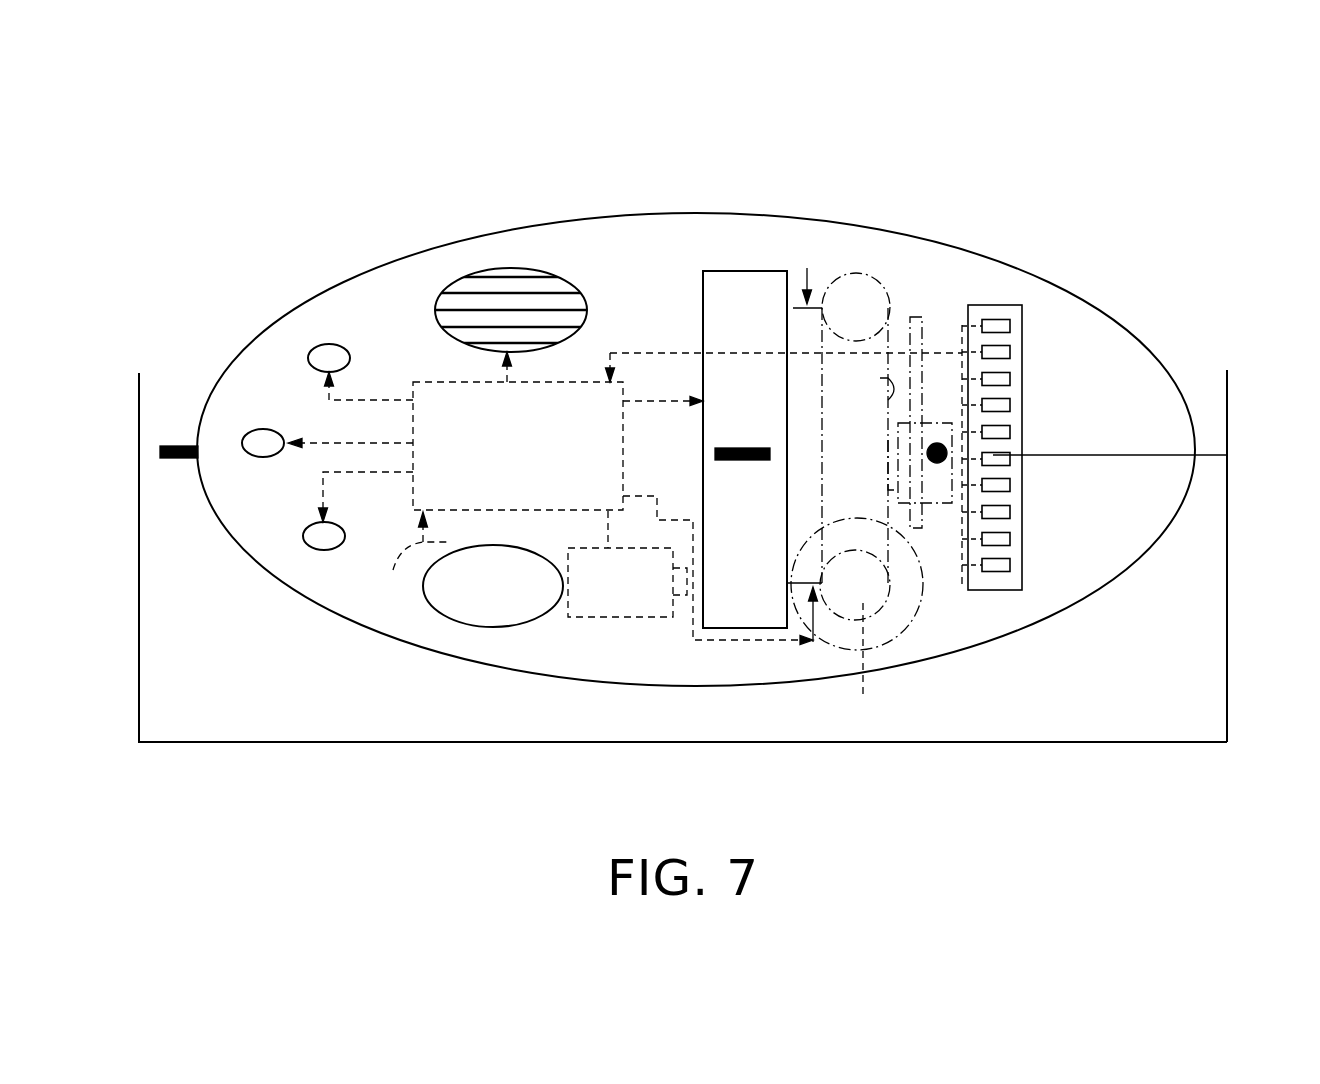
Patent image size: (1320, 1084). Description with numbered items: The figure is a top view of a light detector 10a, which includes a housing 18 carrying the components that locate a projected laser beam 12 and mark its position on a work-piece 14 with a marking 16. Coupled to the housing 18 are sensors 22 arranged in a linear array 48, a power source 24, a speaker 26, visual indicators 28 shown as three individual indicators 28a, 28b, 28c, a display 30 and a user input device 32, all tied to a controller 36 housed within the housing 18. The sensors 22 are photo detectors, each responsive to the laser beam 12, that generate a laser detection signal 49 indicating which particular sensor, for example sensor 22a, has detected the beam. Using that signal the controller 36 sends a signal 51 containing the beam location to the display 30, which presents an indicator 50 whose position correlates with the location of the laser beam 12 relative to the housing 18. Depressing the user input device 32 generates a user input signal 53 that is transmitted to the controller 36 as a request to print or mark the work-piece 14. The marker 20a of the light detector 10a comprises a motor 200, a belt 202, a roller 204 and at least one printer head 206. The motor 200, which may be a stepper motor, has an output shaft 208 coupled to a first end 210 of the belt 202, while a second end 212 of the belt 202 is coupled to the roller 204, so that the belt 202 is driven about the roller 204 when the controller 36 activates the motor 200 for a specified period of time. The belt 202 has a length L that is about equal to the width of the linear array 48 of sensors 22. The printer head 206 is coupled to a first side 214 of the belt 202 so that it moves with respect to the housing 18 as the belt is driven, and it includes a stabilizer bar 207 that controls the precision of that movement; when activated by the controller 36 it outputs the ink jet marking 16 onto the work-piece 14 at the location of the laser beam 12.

The light detector 10a is at (685, 445).
The laser beam 12 is at (1207, 457).
The work-piece 14 is at (1050, 743).
The marking 16 is at (187, 460).
The housing 18 is at (397, 627).
The marker 20a is at (892, 280).
The sensors 22 is at (1045, 447).
The sensor 22a is at (1046, 472).
The power source 24 is at (615, 618).
The speaker 26 is at (510, 268).
The visual indicators 28 is at (302, 470).
The visual indicator 28a is at (329, 343).
The visual indicator 28b is at (250, 430).
The visual indicator 28c is at (317, 548).
The display 30 is at (745, 256).
The user input device 32 is at (505, 623).
The controller 36 is at (442, 382).
The linear array 48 is at (1045, 471).
The laser detection signal 49 is at (622, 352).
The indicator 50 is at (717, 448).
The signal 51 is at (633, 402).
The user input signal 53 is at (412, 556).
The length L is at (813, 622).
The motor 200 is at (938, 626).
The belt 202 is at (908, 305).
The roller 204 is at (857, 273).
The printer head 206 is at (890, 578).
The stabilizer bar 207 is at (900, 307).
The output shaft 208 is at (897, 650).
The first end 210 is at (938, 539).
The second end 212 is at (893, 300).
The first side 214 is at (862, 427).